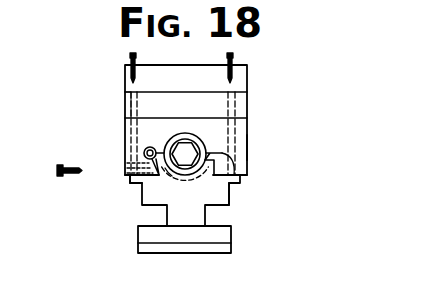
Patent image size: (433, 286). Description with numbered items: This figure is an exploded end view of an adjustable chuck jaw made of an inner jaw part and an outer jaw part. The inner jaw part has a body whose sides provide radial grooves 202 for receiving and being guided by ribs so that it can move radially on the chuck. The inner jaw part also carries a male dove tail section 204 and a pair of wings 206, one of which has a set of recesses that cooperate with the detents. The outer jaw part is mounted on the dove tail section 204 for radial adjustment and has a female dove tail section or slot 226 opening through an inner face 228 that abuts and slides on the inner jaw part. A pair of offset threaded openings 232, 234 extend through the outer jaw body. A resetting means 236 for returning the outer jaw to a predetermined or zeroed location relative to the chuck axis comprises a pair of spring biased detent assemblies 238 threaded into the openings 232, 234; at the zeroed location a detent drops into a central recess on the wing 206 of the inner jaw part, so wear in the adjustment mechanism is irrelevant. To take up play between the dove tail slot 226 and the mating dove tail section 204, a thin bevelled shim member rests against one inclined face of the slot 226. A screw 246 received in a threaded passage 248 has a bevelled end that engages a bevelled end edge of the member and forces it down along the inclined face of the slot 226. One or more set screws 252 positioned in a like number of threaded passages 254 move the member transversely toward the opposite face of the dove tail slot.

The radial grooves 202 is at (138, 228).
The male dove tail section 204 is at (168, 181).
The wings 206 is at (248, 162).
The female dove tail section or slot 226 is at (248, 146).
The inner face 228 is at (243, 190).
The offset threaded opening 232 is at (131, 112).
The offset threaded opening 234 is at (234, 106).
The resetting means 236 is at (128, 63).
The spring biased detent assemblies 238 is at (236, 58).
The screw 246 is at (151, 141).
The threaded passage 248 is at (144, 152).
The set screws 252 is at (67, 181).
The threaded passages 254 is at (126, 177).